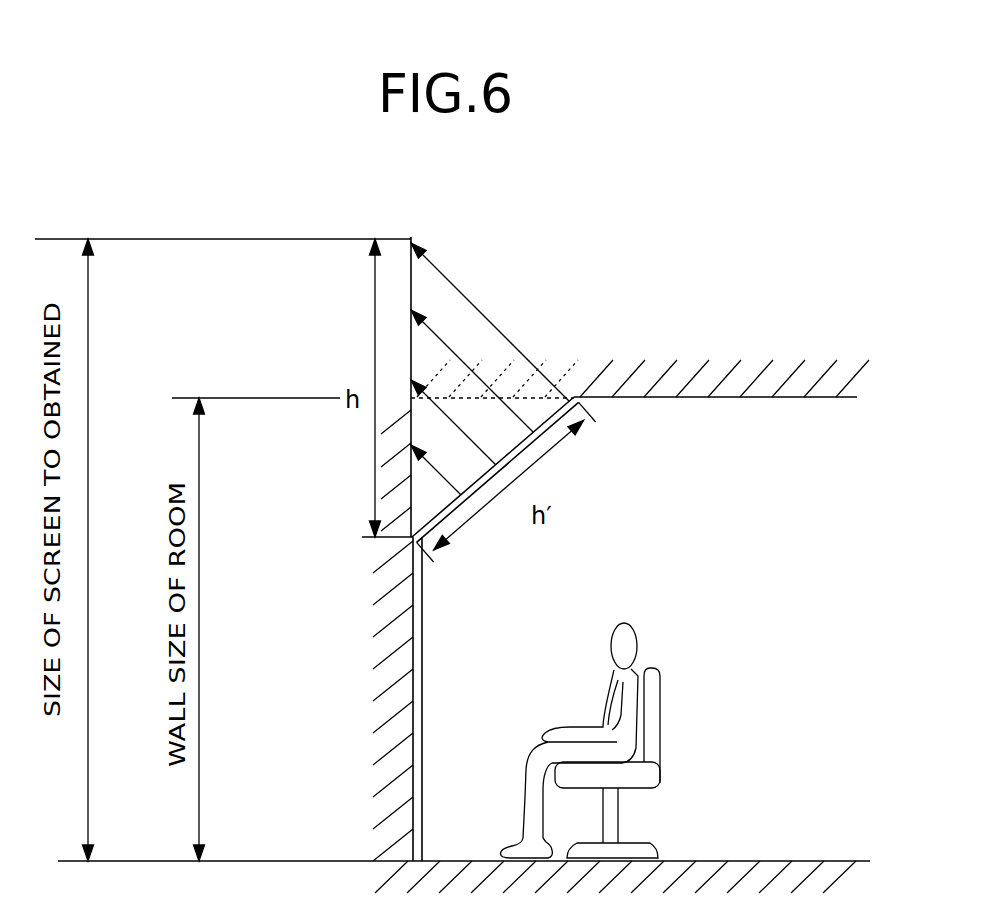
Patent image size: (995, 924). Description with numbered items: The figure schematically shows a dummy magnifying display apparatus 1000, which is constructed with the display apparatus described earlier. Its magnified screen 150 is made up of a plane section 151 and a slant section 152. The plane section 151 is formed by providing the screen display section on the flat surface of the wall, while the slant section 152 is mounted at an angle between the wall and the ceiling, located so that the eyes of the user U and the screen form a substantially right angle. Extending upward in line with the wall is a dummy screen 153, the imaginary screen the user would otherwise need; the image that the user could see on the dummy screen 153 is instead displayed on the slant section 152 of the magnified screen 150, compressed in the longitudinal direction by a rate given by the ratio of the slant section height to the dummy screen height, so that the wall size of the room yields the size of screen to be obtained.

The dummy magnifying display apparatus 1000 is at (670, 295).
The magnified screen 150 is at (318, 442).
The plane section 151 is at (412, 538).
The slant section 152 is at (458, 497).
The dummy screen 153 is at (413, 374).
The user U is at (637, 638).